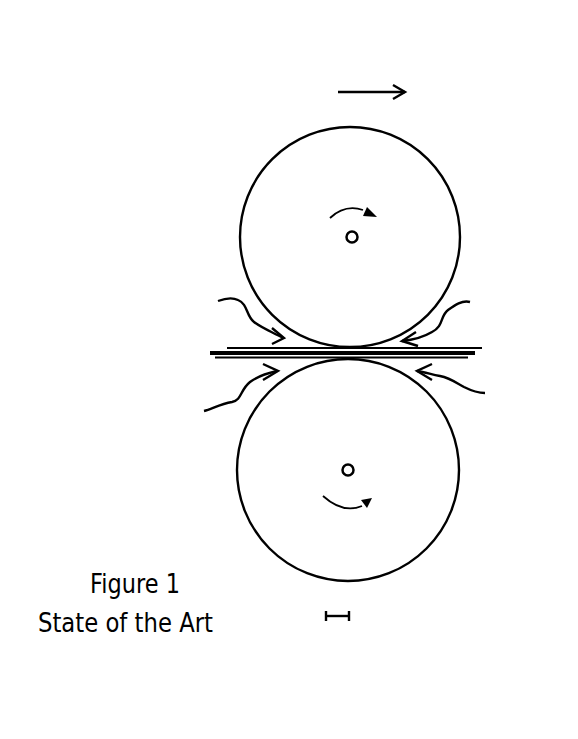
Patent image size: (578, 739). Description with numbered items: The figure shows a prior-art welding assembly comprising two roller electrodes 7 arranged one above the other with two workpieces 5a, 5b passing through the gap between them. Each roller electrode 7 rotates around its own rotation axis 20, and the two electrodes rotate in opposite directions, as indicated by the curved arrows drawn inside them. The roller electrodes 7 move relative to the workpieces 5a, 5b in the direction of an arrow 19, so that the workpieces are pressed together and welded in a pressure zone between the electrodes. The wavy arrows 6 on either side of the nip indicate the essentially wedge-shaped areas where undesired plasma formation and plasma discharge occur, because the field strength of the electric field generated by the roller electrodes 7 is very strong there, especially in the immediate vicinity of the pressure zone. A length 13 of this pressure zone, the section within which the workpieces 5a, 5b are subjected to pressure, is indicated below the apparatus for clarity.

The workpiece 5a is at (482, 350).
The workpiece 5b is at (213, 353).
The arrows indicating wedge-shaped area 6 is at (236, 300).
The roller electrode 7 is at (335, 320).
The length of the pressure zone 13 is at (334, 616).
The arrow 19 is at (372, 90).
The rotation axis 20 is at (360, 234).